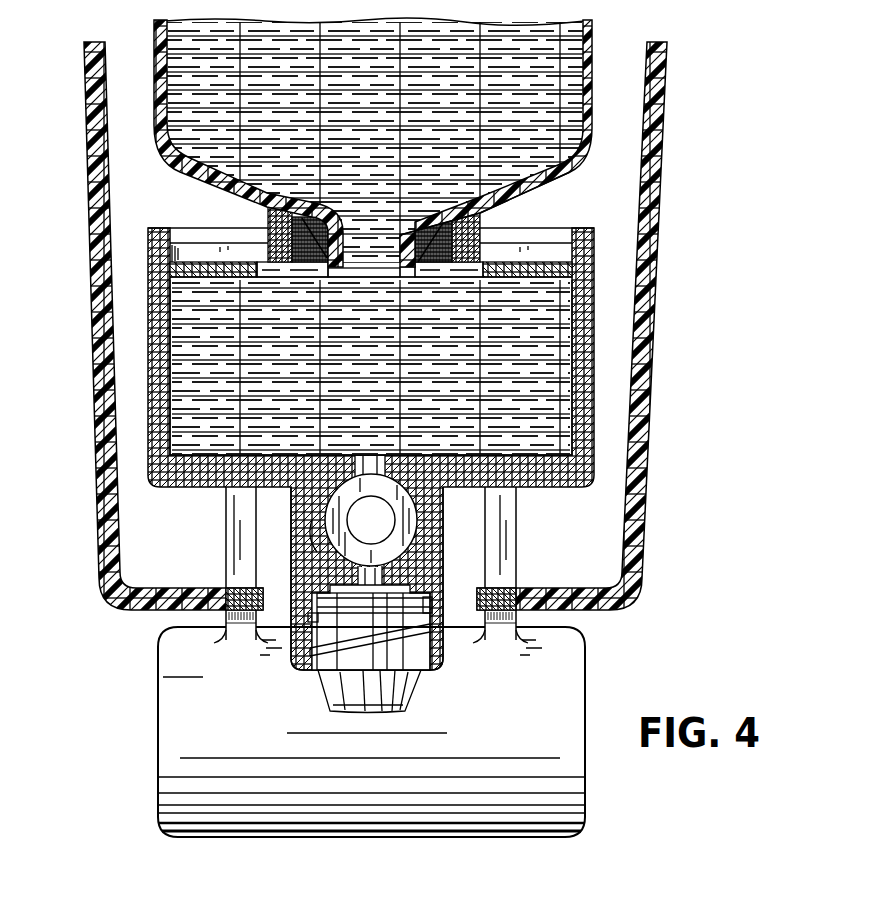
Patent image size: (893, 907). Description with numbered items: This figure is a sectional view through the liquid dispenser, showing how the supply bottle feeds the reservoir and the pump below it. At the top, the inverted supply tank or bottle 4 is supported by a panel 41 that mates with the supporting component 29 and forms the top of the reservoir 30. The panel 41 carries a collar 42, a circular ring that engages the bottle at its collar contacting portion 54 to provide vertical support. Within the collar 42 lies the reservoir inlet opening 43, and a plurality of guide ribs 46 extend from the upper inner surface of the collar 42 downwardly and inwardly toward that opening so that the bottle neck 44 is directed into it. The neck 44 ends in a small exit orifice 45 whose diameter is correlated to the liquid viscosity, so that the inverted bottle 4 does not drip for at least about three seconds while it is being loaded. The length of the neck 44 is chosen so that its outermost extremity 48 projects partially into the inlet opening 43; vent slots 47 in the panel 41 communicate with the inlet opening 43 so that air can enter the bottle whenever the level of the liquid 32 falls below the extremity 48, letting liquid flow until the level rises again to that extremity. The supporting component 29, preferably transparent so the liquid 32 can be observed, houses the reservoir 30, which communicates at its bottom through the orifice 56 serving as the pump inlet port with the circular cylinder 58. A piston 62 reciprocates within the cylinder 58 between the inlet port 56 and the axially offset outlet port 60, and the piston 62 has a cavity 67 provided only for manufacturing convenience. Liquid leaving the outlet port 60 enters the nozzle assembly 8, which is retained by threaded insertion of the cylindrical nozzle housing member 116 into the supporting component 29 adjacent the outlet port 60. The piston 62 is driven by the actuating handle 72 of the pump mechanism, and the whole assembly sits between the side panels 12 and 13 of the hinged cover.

The supply tank or bottle 4 is at (591, 47).
The nozzle assembly 8 is at (287, 672).
The side panel 12 is at (648, 85).
The side panel 13 is at (88, 148).
The supporting component 29 is at (145, 387).
The reservoir 30 is at (172, 320).
The liquid 32 is at (283, 401).
The panel 41 is at (202, 257).
The collar 42 is at (476, 220).
The reservoir inlet opening 43 is at (412, 273).
The bottle neck 44 is at (403, 218).
The exit orifice 45 is at (360, 257).
The guide ribs 46 is at (306, 240).
The vent slots 47 is at (283, 265).
The outermost extremity 48 is at (387, 272).
The collar contacting portion 54 is at (462, 203).
The orifice 56 is at (358, 472).
The cylinder 58 is at (400, 522).
The outlet port 60 is at (358, 573).
The piston 62 is at (333, 500).
The cavity 67 is at (371, 500).
The actuating handle 72 is at (146, 725).
The nozzle housing member 116 is at (412, 699).